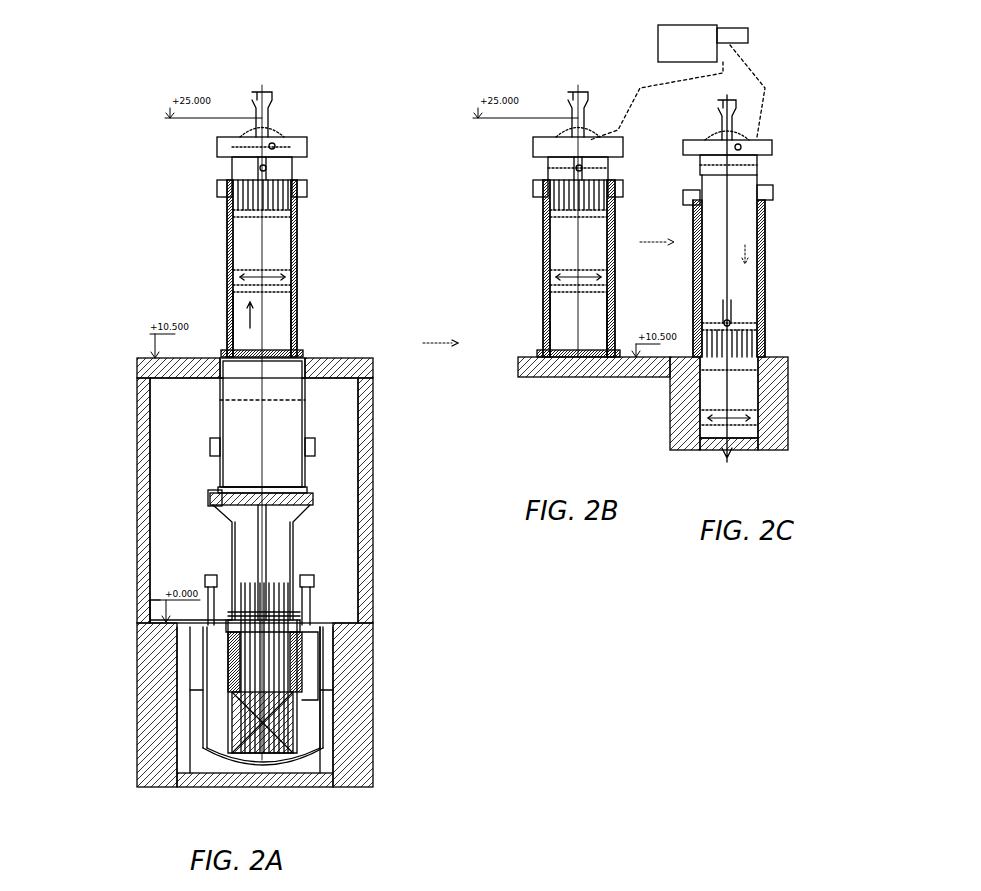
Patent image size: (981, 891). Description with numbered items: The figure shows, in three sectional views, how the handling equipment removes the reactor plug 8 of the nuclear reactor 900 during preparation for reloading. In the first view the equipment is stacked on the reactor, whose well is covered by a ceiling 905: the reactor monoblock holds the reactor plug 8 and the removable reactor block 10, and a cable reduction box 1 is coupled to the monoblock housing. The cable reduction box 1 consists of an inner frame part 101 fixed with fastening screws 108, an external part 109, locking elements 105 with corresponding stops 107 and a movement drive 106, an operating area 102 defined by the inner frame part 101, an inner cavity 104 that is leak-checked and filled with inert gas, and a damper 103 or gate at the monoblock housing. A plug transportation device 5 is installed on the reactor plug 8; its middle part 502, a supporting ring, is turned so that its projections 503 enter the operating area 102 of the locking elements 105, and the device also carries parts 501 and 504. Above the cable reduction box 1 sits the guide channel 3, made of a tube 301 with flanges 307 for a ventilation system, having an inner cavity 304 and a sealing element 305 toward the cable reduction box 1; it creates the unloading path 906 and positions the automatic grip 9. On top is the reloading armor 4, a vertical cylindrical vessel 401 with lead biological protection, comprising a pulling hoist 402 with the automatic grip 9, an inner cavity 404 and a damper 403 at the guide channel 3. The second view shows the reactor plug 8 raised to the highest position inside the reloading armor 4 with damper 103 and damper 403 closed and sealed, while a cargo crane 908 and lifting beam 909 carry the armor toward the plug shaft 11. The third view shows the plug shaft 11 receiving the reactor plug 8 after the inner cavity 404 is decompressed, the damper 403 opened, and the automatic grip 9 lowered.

In FIG. 2A, the cable reduction box 1 is at (298, 508).
In FIG. 2A, the guide channel 3 is at (305, 438).
In FIG. 2A, the reloading armor 4 is at (282, 320).
In FIG. 2B, the reloading armor 4 is at (548, 258).
In FIG. 2C, the reloading armor 4 is at (766, 172).
In FIG. 2A, the plug transportation device 5 is at (272, 180).
In FIG. 2C, the plug transportation device 5 is at (750, 330).
In FIG. 2A, the reactor plug 8 is at (278, 246).
In FIG. 2B, the reactor plug 8 is at (600, 256).
In FIG. 2C, the reactor plug 8 is at (754, 392).
In FIG. 2A, the automatic grip 9 is at (260, 170).
In FIG. 2B, the automatic grip 9 is at (580, 166).
In FIG. 2C, the automatic grip 9 is at (730, 322).
In FIG. 2A, the removable reactor block 10 is at (272, 738).
In FIG. 2B, the plug shaft 11 is at (646, 378).
In FIG. 2A, the inner frame part 101 is at (232, 598).
In FIG. 2A, the operating area 102 is at (268, 556).
In FIG. 2A, the damper 103 is at (255, 628).
In FIG. 2A, the inner cavity 104 is at (292, 645).
In FIG. 2A, the locking elements 105 is at (287, 612).
In FIG. 2A, the movement drive 106 is at (240, 598).
In FIG. 2A, the stops 107 is at (302, 621).
In FIG. 2A, the fastening screws 108 is at (236, 617).
In FIG. 2A, the external part 109 is at (208, 498).
In FIG. 2A, the tube 301 is at (305, 407).
In FIG. 2A, the inner cavity 304 is at (237, 422).
In FIG. 2A, the sealing element 305 is at (308, 492).
In FIG. 2A, the flanges 307 is at (313, 447).
In FIG. 2A, the vertical cylindrical vessel 401 is at (226, 228).
In FIG. 2C, the vertical cylindrical vessel 401 is at (765, 248).
In FIG. 2A, the pulling hoist 402 is at (282, 138).
In FIG. 2A, the damper 403 is at (265, 356).
In FIG. 2B, the damper 403 is at (572, 356).
In FIG. 2A, the inner cavity 404 is at (238, 292).
In FIG. 2B, the inner cavity 404 is at (558, 319).
In FIG. 2B, the head bolt blocks 501 is at (560, 182).
In FIG. 2B, the middle part 502 is at (556, 210).
In FIG. 2B, the projections 503 is at (600, 208).
In FIG. 2B, the head lifting fixture 504 is at (596, 176).
In FIG. 2A, the nuclear reactor 900 is at (150, 360).
In FIG. 2A, the ceiling 905 is at (172, 380).
In FIG. 2A, the unloading path 906 is at (246, 316).
In FIG. 2B, the cargo crane 908 is at (657, 40).
In FIG. 2B, the lifting beam 909 is at (748, 35).